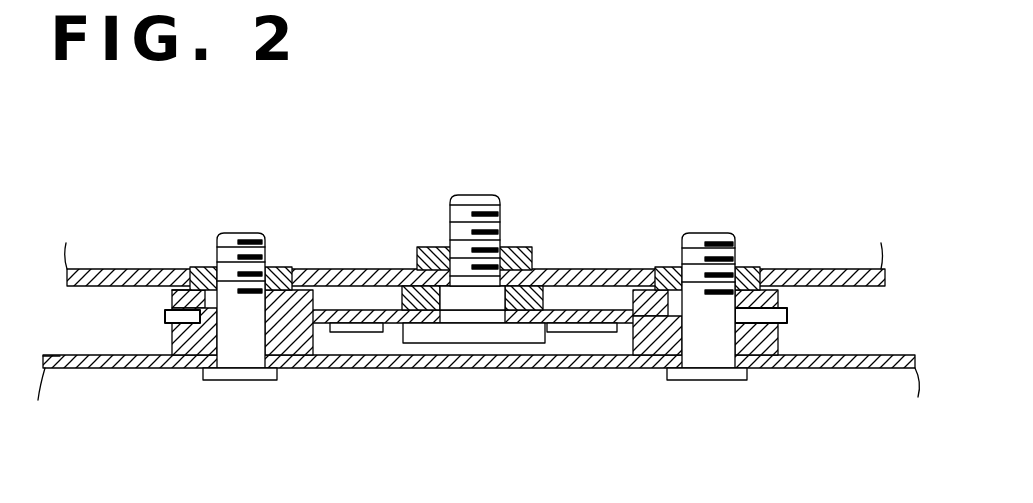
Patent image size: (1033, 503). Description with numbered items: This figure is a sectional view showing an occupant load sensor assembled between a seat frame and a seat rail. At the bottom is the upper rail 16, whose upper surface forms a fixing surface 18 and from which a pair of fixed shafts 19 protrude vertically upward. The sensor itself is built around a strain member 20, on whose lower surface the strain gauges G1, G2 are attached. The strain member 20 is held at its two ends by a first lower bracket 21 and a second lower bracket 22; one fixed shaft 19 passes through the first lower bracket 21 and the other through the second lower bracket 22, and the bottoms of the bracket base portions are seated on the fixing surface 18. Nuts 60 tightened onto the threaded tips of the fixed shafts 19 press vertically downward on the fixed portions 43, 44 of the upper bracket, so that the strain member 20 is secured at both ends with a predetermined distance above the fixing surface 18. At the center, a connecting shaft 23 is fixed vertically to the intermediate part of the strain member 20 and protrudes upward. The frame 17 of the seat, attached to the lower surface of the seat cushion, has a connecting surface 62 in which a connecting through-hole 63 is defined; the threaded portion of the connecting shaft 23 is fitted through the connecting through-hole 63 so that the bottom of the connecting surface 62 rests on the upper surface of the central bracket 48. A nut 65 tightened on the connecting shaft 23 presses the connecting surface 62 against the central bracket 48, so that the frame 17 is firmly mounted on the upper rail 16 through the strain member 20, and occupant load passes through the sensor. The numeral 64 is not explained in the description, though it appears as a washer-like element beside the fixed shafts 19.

The upper rail 16 is at (98, 370).
The frame 17 is at (847, 272).
The fixing surface 18 is at (838, 357).
The fixed shaft 19 is at (237, 243).
The strain member 20 is at (568, 320).
The first lower bracket 21 is at (303, 338).
The second lower bracket 22 is at (764, 341).
The connecting shaft 23 is at (470, 344).
The fixed portion 43 is at (172, 301).
The fixed portion 44 is at (784, 293).
The central bracket 48 is at (401, 287).
The nut 60 is at (206, 267).
The connecting surface 62 is at (104, 286).
The connecting through-hole 63 is at (455, 252).
The washer 64 is at (281, 267).
The nut 65 is at (514, 248).
The strain gauge G1 is at (352, 322).
The strain gauge G2 is at (586, 322).